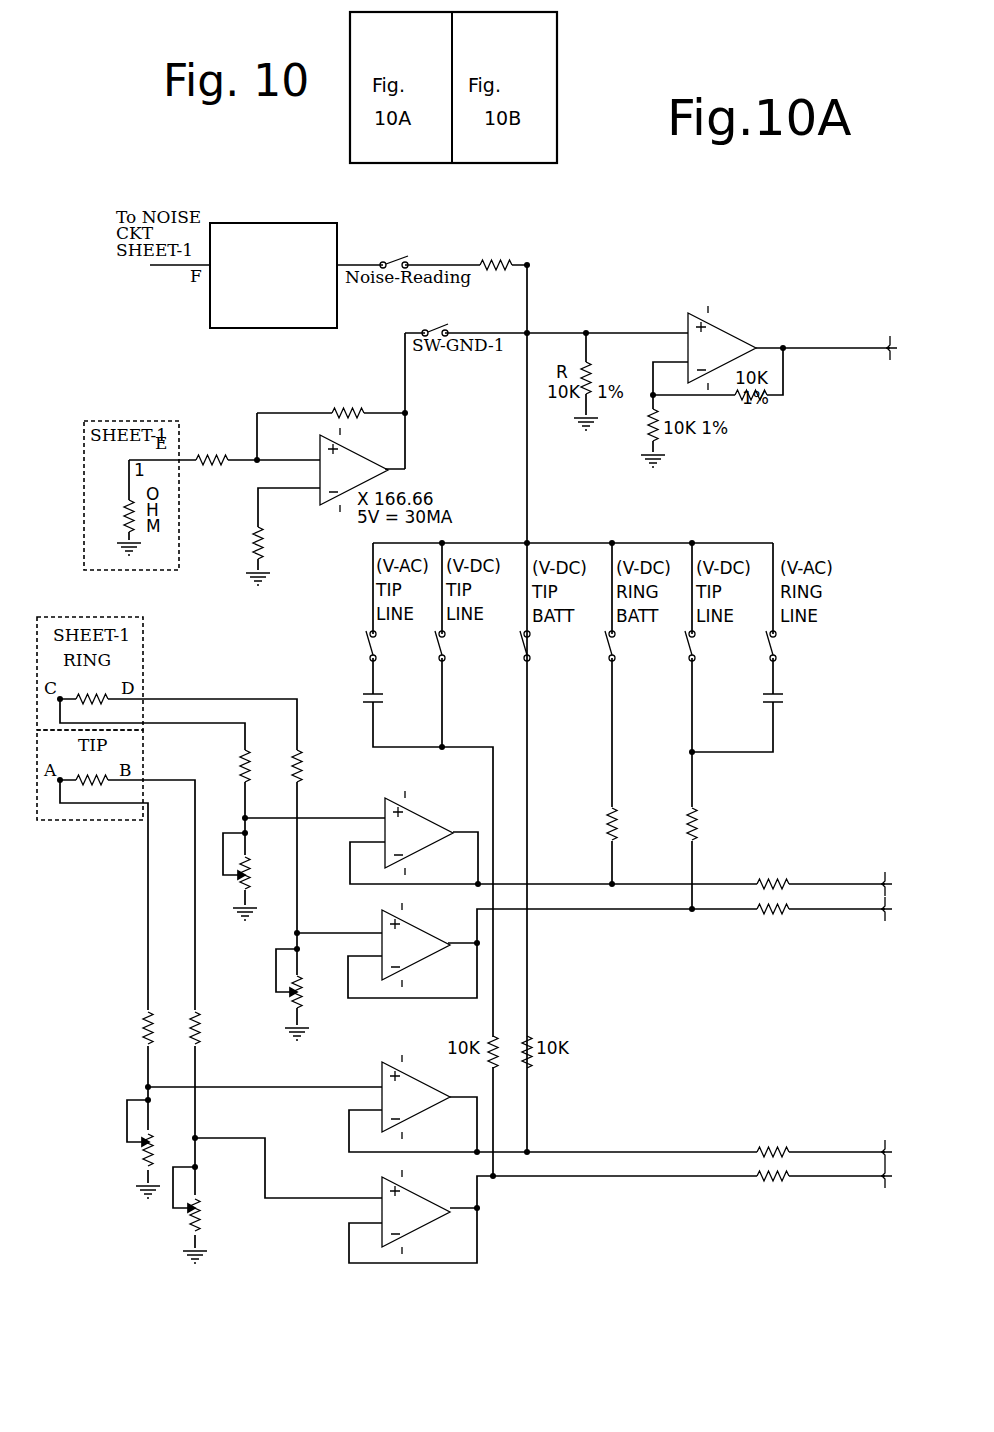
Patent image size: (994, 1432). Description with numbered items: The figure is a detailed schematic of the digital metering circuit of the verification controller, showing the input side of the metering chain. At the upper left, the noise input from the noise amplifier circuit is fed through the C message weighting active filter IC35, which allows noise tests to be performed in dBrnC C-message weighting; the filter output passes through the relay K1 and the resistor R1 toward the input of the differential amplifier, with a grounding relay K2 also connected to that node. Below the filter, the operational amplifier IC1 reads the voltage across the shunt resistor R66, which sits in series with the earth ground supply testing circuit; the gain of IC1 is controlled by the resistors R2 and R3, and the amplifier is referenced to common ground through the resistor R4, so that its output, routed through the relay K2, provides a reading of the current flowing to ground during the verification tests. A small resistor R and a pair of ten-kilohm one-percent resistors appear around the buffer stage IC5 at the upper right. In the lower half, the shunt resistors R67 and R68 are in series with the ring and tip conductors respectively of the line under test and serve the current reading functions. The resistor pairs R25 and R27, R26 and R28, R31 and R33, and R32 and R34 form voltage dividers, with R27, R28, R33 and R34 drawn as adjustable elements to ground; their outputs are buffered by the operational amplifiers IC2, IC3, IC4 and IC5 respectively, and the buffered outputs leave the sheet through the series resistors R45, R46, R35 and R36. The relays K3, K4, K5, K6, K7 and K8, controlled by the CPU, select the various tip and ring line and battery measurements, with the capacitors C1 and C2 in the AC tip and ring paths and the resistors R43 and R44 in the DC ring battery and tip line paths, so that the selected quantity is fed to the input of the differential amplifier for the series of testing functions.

The C message weighting active filter IC35 is at (273, 275).
The relay K1 is at (401, 253).
The resistor R1 is at (496, 254).
The relay K2 is at (442, 320).
The operational amplifier IC5 is at (570, 780).
The operational amplifier IC1 is at (325, 446).
The resistor R2 is at (212, 459).
The resistor R3 is at (348, 392).
The resistor R4 is at (261, 543).
The shunt resistor R66 is at (110, 516).
The 10K 1% resistor R is at (586, 378).
The relay K3 is at (385, 646).
The relay K4 is at (454, 646).
The relay K5 is at (539, 646).
The relay K6 is at (624, 646).
The relay K7 is at (704, 646).
The relay K8 is at (785, 646).
The .1 uF capacitor C1 is at (375, 709).
The .1 uF capacitor C2 is at (791, 702).
The shunt resistor R67 is at (92, 687).
The shunt resistor R68 is at (92, 768).
The resistor R25 is at (227, 771).
The resistor R26 is at (315, 771).
The resistor R27 is at (262, 878).
The resistor R28 is at (315, 995).
The resistor R31 is at (128, 1027).
The resistor R32 is at (217, 1027).
The resistor R33 is at (138, 1151).
The resistor R34 is at (192, 1220).
The 10K 1% resistor R43 is at (630, 836).
The 10K 1% resistor R44 is at (709, 836).
The 10K resistor R45 is at (776, 866).
The 10K 1% resistor R46 is at (776, 942).
The 10K resistor R35 is at (776, 1131).
The 10K resistor R36 is at (776, 1195).
The operational amplifier IC2 is at (420, 833).
The operational amplifier IC3 is at (416, 945).
The operational amplifier IC4 is at (416, 1097).